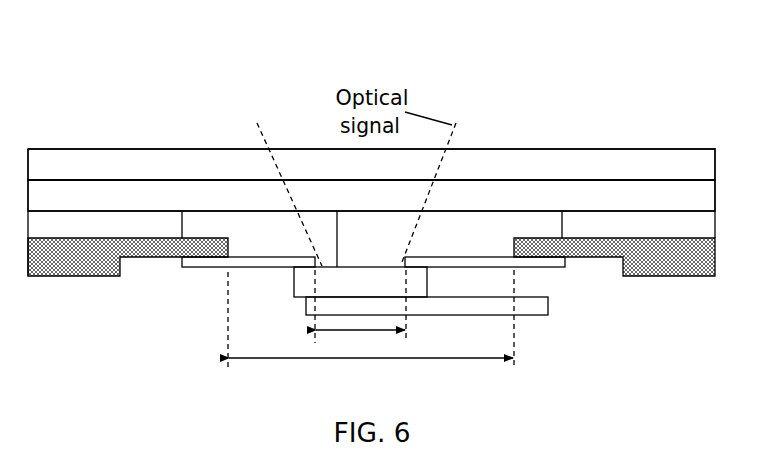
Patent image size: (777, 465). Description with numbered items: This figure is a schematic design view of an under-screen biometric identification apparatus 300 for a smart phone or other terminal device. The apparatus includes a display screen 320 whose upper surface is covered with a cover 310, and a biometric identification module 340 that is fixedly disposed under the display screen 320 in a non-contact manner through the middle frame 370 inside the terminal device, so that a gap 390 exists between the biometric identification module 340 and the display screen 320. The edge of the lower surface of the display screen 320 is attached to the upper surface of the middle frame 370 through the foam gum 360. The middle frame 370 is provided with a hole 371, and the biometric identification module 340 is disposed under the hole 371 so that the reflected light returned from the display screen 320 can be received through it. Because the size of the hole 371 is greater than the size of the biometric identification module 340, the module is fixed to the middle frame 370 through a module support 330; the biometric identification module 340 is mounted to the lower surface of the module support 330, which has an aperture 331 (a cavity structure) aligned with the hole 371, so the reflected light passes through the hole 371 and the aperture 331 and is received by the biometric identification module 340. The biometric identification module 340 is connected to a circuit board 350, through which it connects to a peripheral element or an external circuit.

The optical sensor module 300 is at (371, 141).
The cover 310 is at (97, 162).
The display screen 320 is at (96, 193).
The module support 330 is at (212, 267).
The aperture 331 is at (360, 313).
The biometric identification module 340 is at (292, 290).
The circuit board 350 is at (548, 313).
The foam gum 360 is at (643, 233).
The middle frame 370 is at (643, 257).
The hole 371 is at (371, 328).
The gap 390 is at (337, 231).